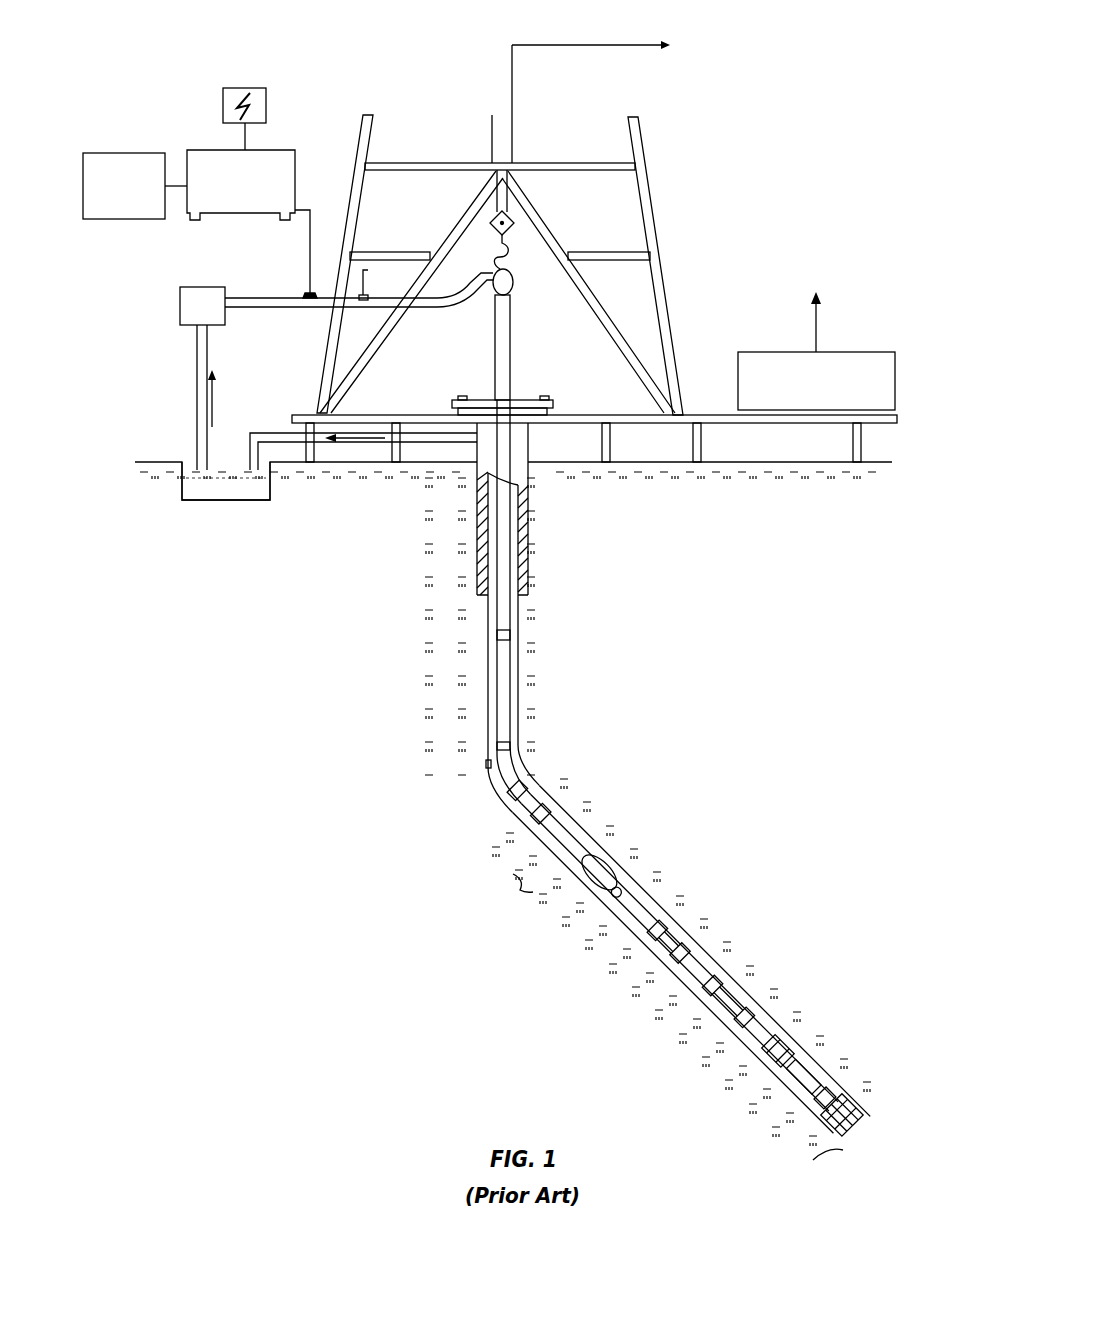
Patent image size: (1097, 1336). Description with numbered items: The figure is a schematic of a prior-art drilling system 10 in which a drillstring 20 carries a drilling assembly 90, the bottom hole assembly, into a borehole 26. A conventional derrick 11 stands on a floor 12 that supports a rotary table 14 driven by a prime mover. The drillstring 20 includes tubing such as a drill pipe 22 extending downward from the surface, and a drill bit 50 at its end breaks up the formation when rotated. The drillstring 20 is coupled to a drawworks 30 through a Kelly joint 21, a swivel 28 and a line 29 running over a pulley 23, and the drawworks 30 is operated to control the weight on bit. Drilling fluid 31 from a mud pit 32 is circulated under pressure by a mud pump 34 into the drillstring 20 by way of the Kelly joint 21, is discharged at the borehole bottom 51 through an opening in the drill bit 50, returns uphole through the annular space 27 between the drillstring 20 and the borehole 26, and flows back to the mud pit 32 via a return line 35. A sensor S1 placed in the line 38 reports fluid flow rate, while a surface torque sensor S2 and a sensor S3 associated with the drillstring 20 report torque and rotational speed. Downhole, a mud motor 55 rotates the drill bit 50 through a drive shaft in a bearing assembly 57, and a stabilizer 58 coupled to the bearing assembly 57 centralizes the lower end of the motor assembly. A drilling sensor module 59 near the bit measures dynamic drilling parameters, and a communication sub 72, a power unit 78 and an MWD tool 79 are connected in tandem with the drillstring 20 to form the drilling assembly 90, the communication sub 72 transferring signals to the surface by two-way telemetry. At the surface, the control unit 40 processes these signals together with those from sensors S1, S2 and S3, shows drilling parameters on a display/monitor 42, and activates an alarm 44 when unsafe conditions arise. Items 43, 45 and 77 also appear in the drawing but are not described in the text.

The drilling system 10 is at (420, 64).
The derrick 11 is at (663, 263).
The floor 12 is at (698, 414).
The rotary table 14 is at (522, 398).
The drillstring 20 is at (526, 681).
The Kelly joint 21 is at (511, 360).
The drill pipe 22 is at (487, 662).
The pulley 23 is at (510, 232).
The borehole 26 is at (523, 772).
The annular space 27 is at (538, 803).
The swivel 28 is at (495, 298).
The line 29 is at (513, 135).
The drawworks 30 is at (872, 351).
The drilling fluid 31 is at (188, 490).
The mud pit 32 is at (250, 492).
The mud pump 34 is at (180, 296).
The return line 35 is at (403, 464).
The line 38 is at (197, 398).
The surface control unit 40 is at (208, 149).
The display/monitor 42 is at (250, 88).
The flow sensor 43 is at (307, 296).
The alarm 44 is at (147, 220).
The signal line 45 is at (310, 210).
The drill bit 50 is at (873, 1098).
The borehole bottom 51 is at (840, 1140).
The mud motor 55 is at (712, 950).
The bearing assembly 57 is at (830, 1055).
The stabilizer 58 is at (838, 1092).
The drilling sensor module 59 is at (840, 1100).
The communication sub 72 is at (497, 768).
The downhole device 77 is at (582, 886).
The power unit 78 is at (512, 812).
The MWD tool 79 is at (526, 833).
The drilling assembly 90 is at (742, 849).
The sensor S1 is at (381, 283).
The surface torque sensor S2 is at (550, 395).
The sensor S3 is at (459, 394).